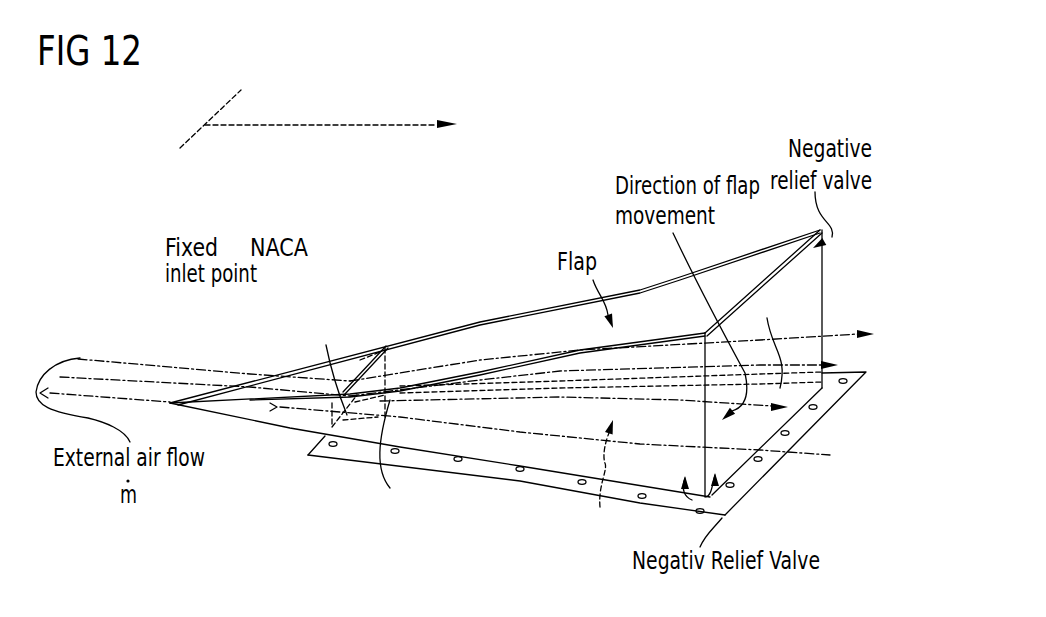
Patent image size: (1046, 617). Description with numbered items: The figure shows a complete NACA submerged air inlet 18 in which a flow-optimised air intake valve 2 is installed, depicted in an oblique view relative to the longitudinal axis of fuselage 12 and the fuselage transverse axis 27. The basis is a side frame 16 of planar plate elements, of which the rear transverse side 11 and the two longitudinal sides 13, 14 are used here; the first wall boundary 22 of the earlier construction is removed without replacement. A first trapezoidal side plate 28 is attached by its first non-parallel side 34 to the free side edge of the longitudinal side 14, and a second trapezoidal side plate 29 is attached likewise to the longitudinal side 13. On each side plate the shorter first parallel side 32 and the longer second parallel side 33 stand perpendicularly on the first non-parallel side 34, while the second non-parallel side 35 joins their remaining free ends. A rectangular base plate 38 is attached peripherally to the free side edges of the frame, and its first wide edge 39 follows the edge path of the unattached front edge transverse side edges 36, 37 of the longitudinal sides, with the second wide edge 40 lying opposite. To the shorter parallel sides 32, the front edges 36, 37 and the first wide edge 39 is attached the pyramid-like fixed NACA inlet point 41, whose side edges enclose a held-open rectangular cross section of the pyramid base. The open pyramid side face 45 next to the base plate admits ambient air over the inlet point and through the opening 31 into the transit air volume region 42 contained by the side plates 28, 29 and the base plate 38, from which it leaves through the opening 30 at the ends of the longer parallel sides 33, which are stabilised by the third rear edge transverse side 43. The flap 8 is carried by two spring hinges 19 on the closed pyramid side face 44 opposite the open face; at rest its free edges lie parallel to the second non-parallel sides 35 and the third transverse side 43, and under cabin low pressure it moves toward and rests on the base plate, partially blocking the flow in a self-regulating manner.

The air intake valve 2 is at (369, 181).
The flap 8 is at (512, 330).
The transverse side 11 is at (745, 473).
The longitudinal axis of fuselage 12 is at (368, 125).
The longitudinal side 13 is at (768, 340).
The longitudinal side 14 is at (490, 465).
The side frame 16 is at (361, 445).
The NACA submerged air inlet 18 is at (420, 216).
The spring hinge 19 is at (346, 376).
The wall boundary, first 22 is at (767, 423).
The fuselage transverse axis 27 is at (195, 143).
The side plate, first 28 is at (586, 453).
The side plate, second 29 is at (790, 319).
The opening 30 is at (808, 287).
The opening 31 is at (378, 346).
The parallel side, first 32 is at (407, 341).
The parallel side, second 33 is at (825, 256).
The non-parallel side, first 34 is at (664, 370).
The non-parallel side, second 35 is at (560, 347).
The front edge transverse side edge 36 is at (308, 456).
The front edge transverse side edge 37 is at (406, 358).
The base plate 38 is at (600, 477).
The wide edge, first 39 is at (375, 428).
The wide edge, second 40 is at (712, 462).
The fixed NACA inlet point 41 is at (258, 351).
The transit air volume region 42 is at (584, 428).
The rear edge transverse side, third 43 is at (765, 276).
The pyramid side face, closed 44 is at (320, 373).
The pyramid side face, open 45 is at (268, 408).